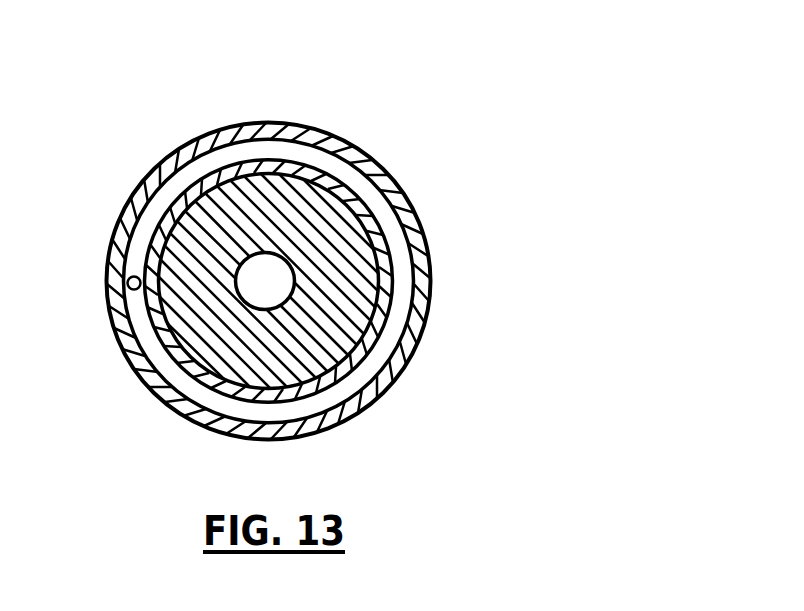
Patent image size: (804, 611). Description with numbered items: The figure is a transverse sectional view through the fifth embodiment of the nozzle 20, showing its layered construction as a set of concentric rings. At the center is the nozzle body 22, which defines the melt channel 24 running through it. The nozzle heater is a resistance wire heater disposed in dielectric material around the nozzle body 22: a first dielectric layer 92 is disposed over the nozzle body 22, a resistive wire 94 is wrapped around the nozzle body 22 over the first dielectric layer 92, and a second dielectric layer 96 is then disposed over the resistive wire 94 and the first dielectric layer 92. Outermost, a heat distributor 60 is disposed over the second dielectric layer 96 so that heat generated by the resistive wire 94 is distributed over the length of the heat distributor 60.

The nozzle 20 is at (329, 243).
The nozzle body 22 is at (350, 272).
The melt channel 24 is at (283, 279).
The heat distributor 60 is at (127, 362).
The first dielectric layer 92 is at (387, 296).
The resistive wire 94 is at (127, 283).
The second dielectric layer 96 is at (125, 312).